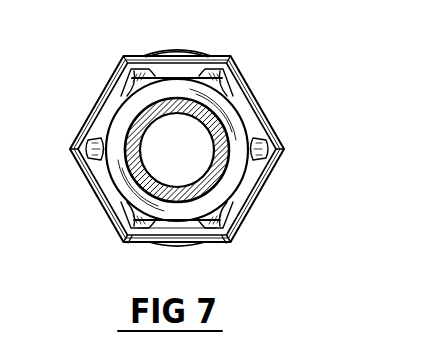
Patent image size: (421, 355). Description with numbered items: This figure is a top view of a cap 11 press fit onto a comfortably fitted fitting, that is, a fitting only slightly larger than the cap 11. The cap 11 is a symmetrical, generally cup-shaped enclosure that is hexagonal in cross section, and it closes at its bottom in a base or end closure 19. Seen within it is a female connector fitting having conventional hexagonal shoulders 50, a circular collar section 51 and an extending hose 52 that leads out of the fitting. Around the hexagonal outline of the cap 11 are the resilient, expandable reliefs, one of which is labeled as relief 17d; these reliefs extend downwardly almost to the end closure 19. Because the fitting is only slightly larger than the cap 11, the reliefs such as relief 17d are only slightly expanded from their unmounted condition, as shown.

The cap 11 is at (283, 160).
The base or end closure 19 is at (267, 101).
The extending hose 52 is at (183, 96).
The hexagonal shoulders 50 is at (103, 102).
The circular collar section 51 is at (227, 242).
The relief 17d is at (126, 244).